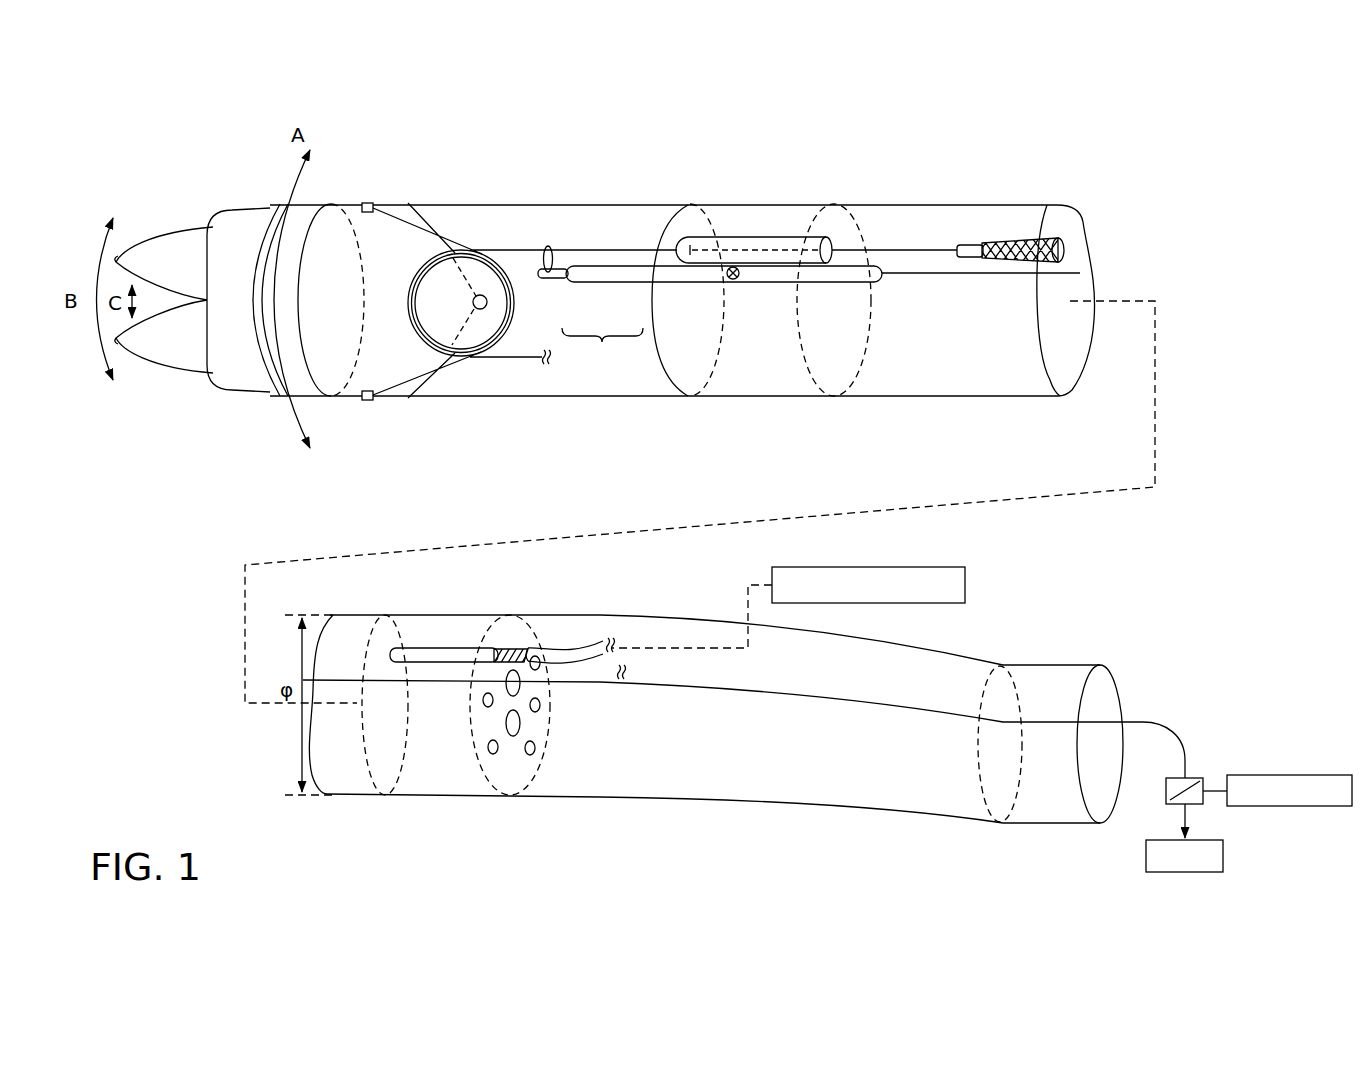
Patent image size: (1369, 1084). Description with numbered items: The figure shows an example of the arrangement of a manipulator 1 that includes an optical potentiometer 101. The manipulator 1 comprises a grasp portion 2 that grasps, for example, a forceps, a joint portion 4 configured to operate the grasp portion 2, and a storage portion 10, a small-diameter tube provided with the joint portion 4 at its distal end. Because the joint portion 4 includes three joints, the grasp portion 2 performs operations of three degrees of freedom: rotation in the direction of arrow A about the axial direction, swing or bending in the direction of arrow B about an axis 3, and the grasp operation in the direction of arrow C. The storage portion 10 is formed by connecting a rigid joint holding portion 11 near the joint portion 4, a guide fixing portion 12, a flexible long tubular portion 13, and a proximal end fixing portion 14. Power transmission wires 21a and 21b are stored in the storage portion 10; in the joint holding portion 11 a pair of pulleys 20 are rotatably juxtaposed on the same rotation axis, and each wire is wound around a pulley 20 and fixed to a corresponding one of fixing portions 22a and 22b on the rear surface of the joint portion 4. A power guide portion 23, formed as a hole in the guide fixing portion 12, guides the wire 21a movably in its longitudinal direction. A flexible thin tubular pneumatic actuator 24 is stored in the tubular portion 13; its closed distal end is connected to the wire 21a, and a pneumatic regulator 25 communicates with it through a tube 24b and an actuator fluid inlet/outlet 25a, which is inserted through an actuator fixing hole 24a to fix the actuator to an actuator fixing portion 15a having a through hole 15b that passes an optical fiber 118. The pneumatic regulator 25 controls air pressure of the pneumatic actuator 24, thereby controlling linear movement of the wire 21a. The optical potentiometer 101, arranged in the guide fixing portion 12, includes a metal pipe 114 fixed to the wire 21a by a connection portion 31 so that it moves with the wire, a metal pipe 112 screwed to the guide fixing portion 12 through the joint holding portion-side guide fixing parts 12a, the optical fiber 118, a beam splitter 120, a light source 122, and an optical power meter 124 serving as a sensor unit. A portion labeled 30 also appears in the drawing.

The manipulator 1 is at (1002, 186).
The grasp portion 2 is at (170, 360).
The axis 3 is at (488, 302).
The joint portion 4 is at (306, 212).
The storage portion 10 is at (1084, 228).
The joint holding portion 11 is at (685, 413).
The guide fixing portion 12 is at (790, 398).
The joint holding portion-side guide fixing part 12a is at (733, 279).
The tubular portion 13 is at (970, 398).
The proximal end fixing portion 14 is at (1045, 825).
The actuator fixing portion 15a is at (420, 797).
The actuator fixing portion through hole 15b is at (515, 693).
The pulley 20 is at (435, 318).
The wire 21a is at (438, 228).
The wire 21b is at (445, 372).
The fixing portion 22a is at (367, 203).
The fixing portion 22b is at (370, 391).
The power guide portion 23 is at (723, 237).
The pneumatic actuator 24 is at (1040, 238).
The actuator fixing hole 24a is at (415, 648).
The tube 24b is at (584, 644).
The pneumatic regulator 25 is at (906, 565).
The actuator fluid inlet/outlet 25a is at (518, 655).
The lumen wall 30 is at (351, 680).
The connection portion 31 is at (543, 260).
The optical potentiometer 101 is at (602, 342).
The metal pipe 112 is at (613, 284).
The metal pipe 114 is at (560, 282).
The optical fiber 118 is at (1068, 272).
The beam splitter 120 is at (1195, 776).
The light source 122 is at (1268, 773).
The optical power meter 124 is at (1223, 858).